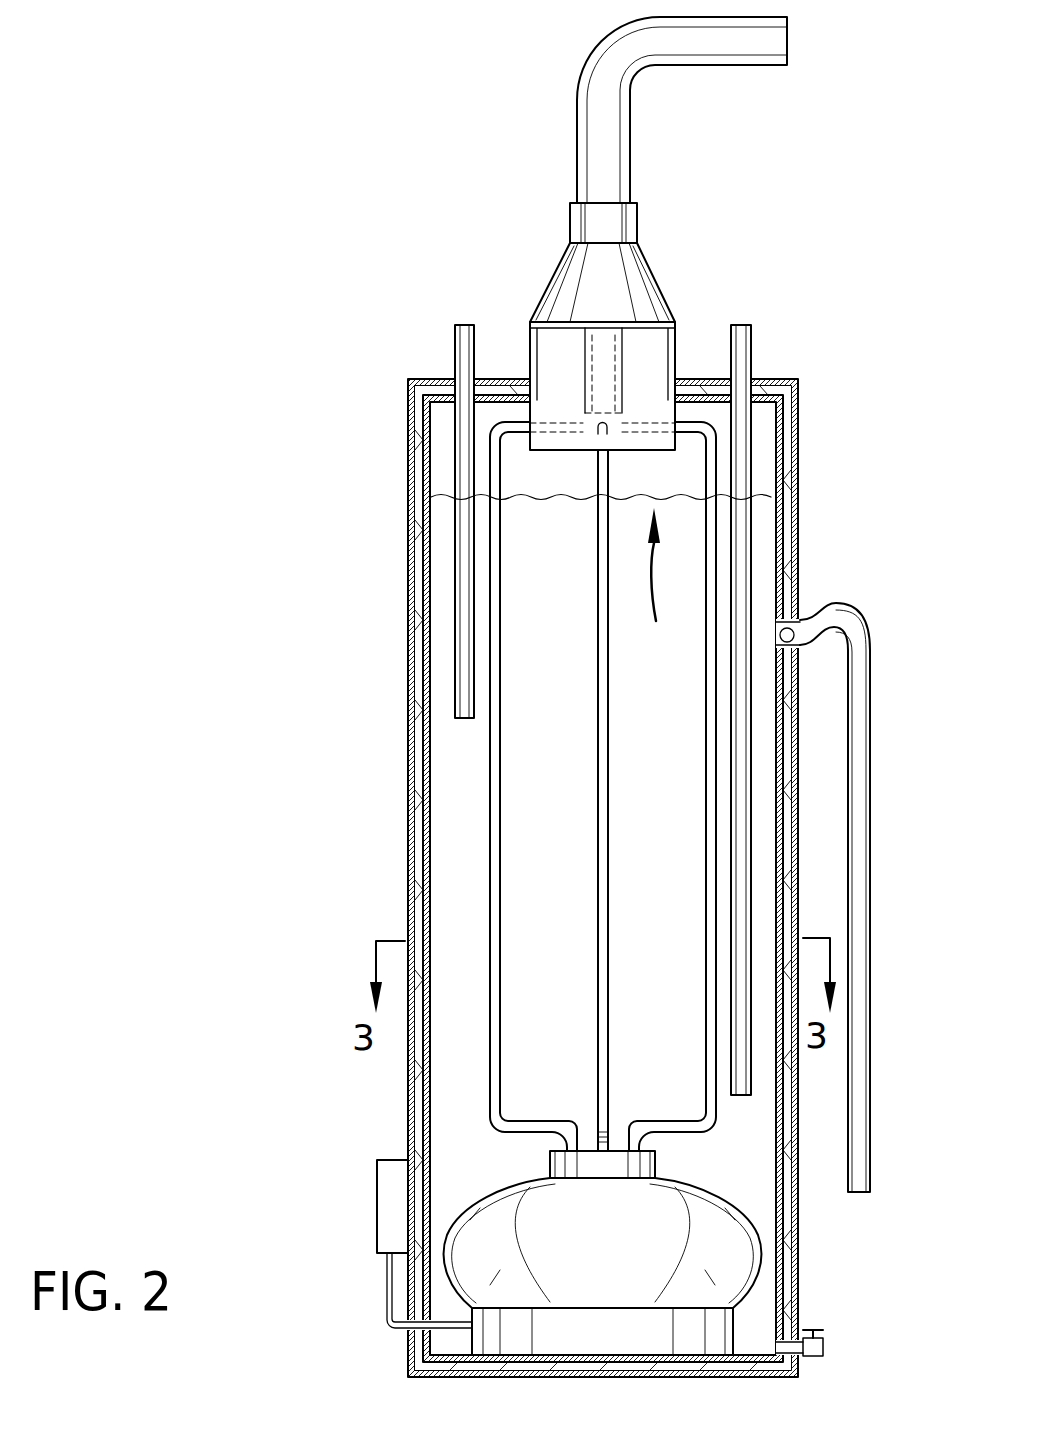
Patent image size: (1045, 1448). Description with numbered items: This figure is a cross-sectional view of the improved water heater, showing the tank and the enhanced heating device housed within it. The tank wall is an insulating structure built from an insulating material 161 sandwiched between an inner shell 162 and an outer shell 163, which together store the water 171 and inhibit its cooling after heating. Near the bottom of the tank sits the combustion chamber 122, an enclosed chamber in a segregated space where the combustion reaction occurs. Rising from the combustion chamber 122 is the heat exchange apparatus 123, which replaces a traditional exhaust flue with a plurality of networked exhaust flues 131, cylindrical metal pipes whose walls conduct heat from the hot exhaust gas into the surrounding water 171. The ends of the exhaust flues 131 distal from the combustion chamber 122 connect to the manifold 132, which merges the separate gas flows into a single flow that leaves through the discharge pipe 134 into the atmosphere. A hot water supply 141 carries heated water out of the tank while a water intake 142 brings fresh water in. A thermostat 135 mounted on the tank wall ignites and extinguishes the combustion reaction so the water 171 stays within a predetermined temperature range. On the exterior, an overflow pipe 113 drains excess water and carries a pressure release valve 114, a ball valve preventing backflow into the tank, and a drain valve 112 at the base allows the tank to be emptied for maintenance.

The drain valve 112 is at (822, 1342).
The overflow pipe 113 is at (870, 877).
The pressure release valve 114 is at (790, 637).
The combustion chamber 122 is at (718, 1258).
The heat exchange apparatus 123 is at (540, 535).
The plurality of networked exhaust flues 131 is at (710, 758).
The manifold 132 is at (638, 418).
The discharge pipe 134 is at (610, 180).
The thermostat 135 is at (377, 1212).
The hot water supply 141 is at (455, 352).
The water intake 142 is at (751, 347).
The insulating material 161 is at (783, 512).
The inner shell 162 is at (778, 579).
The outer shell 163 is at (798, 597).
The water 171 is at (648, 584).